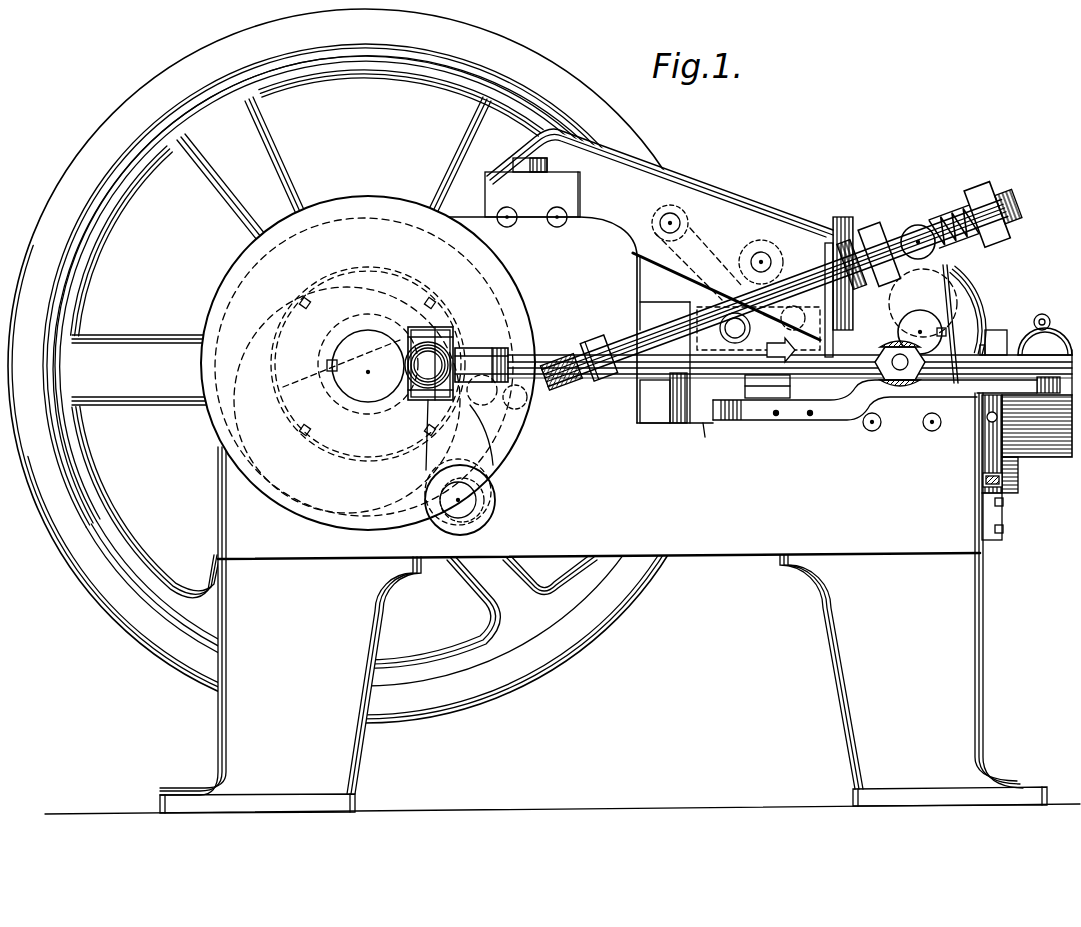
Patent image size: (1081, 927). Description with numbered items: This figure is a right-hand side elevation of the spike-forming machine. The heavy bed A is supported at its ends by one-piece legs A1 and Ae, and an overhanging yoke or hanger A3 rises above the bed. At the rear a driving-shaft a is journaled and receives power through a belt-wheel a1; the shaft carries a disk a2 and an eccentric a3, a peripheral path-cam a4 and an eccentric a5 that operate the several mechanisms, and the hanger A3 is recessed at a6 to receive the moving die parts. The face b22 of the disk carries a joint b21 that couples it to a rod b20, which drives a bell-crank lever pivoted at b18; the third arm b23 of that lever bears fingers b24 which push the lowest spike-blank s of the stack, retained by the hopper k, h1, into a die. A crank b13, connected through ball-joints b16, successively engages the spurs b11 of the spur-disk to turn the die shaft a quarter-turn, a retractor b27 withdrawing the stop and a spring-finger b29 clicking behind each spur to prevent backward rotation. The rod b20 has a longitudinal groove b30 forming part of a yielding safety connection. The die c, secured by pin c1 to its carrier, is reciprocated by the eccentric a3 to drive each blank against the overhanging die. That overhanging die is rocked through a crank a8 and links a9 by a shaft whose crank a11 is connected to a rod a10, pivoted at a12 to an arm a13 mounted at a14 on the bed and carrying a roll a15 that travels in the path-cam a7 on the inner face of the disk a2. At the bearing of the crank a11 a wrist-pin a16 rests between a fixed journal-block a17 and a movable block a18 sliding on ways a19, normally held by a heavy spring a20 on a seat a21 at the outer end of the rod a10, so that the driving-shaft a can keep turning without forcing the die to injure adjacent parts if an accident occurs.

The belt-wheel a1 is at (160, 85).
The driving-shaft a is at (368, 366).
The face of cam b22 is at (350, 200).
The joint b21 is at (400, 390).
The path-cam a7 is at (248, 415).
The roll a15 is at (495, 350).
The connecting-rod a10 is at (623, 345).
The pivot a12 is at (585, 405).
The rod b20 is at (604, 390).
The pin c1 is at (658, 312).
The die c is at (665, 362).
The hopper k is at (668, 400).
The arm a13 is at (500, 452).
The pivot a14 is at (470, 508).
The bed A is at (562, 473).
The leg or pillar A1 is at (290, 630).
The leg or pillar Ae is at (913, 599).
The yoke or hanger A3 is at (758, 208).
The eccentric a5 is at (680, 222).
The recess a6 is at (764, 260).
The peripheral path-cam a4 is at (784, 264).
The eccentric a3 is at (718, 262).
The disk a2 is at (757, 338).
The pivot b18 is at (838, 222).
The ways a19 is at (872, 232).
The fixed journal-block a17 is at (885, 236).
The wrist-pin a16 is at (919, 240).
The movable block a18 is at (945, 230).
The heavy spring a20 is at (996, 214).
The seat a21 is at (1003, 232).
The crank a8 is at (923, 302).
The links a9 is at (924, 330).
The crank a11 is at (962, 300).
The longitudinal groove b30 is at (975, 352).
The arm or crank b13 is at (1005, 330).
The ball-joint b16 is at (1043, 330).
The retractor b27 is at (1018, 470).
The spring-finger b29 is at (985, 482).
The spurs b11 is at (982, 480).
The spike-blanks s is at (708, 440).
The third arm b23 is at (776, 416).
The fingers b24 is at (810, 416).
The hopper h1 is at (777, 388).